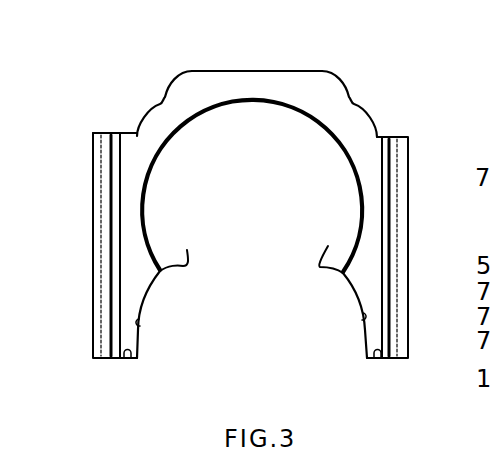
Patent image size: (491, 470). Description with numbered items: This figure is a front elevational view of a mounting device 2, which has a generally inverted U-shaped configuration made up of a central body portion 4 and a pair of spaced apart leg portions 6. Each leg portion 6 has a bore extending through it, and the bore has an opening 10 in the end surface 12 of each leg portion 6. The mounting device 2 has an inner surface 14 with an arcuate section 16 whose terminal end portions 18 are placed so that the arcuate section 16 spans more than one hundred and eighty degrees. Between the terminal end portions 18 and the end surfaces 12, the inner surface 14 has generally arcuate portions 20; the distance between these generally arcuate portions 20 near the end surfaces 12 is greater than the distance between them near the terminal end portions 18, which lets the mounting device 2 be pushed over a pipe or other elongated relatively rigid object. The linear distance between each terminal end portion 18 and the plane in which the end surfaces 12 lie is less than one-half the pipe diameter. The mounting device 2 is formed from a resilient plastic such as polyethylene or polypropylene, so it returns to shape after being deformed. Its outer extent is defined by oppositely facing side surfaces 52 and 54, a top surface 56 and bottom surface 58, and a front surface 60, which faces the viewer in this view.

The mounting device 2 is at (392, 81).
The central body portion 4 is at (247, 82).
The leg portions 6 is at (126, 134).
The opening 10 is at (110, 359).
The end surface 12 is at (137, 357).
The inner surface 14 is at (271, 154).
The arcuate section 16 is at (261, 99).
The terminal end portions 18 is at (253, 246).
The generally arcuate portions 20 is at (143, 324).
The side surface 52 is at (93, 229).
The side surface 54 is at (410, 223).
The top surface 56 is at (195, 70).
The bottom surface 58 is at (98, 360).
The front surface 60 is at (360, 143).